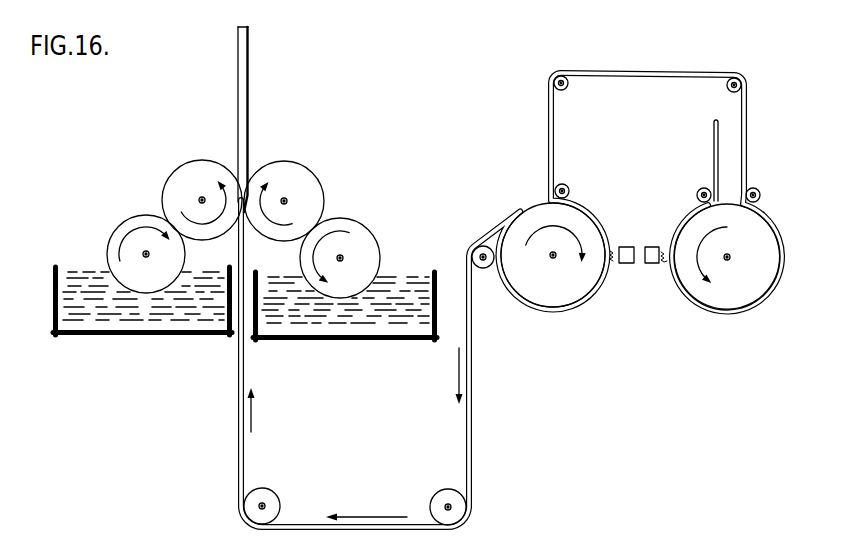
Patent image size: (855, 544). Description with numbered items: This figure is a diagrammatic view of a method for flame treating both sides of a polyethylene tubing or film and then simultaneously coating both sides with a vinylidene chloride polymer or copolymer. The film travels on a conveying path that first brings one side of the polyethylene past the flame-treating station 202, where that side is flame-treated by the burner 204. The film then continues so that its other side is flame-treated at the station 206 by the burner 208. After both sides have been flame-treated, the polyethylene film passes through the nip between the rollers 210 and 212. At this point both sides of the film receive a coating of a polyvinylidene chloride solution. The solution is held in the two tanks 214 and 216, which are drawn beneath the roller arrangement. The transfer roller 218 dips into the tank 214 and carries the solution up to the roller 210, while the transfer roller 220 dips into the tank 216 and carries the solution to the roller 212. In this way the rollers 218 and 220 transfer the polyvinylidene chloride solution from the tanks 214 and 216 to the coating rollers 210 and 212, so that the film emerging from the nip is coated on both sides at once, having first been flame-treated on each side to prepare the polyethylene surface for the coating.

The flame-treating station 202 is at (688, 298).
The burner 204 is at (650, 249).
The flame-treating station 206 is at (600, 228).
The burner 208 is at (627, 247).
The roller 210 is at (324, 146).
The roller 212 is at (185, 162).
The tank 214 is at (365, 341).
The tank 216 is at (104, 335).
The roller 218 is at (376, 239).
The roller 220 is at (118, 227).